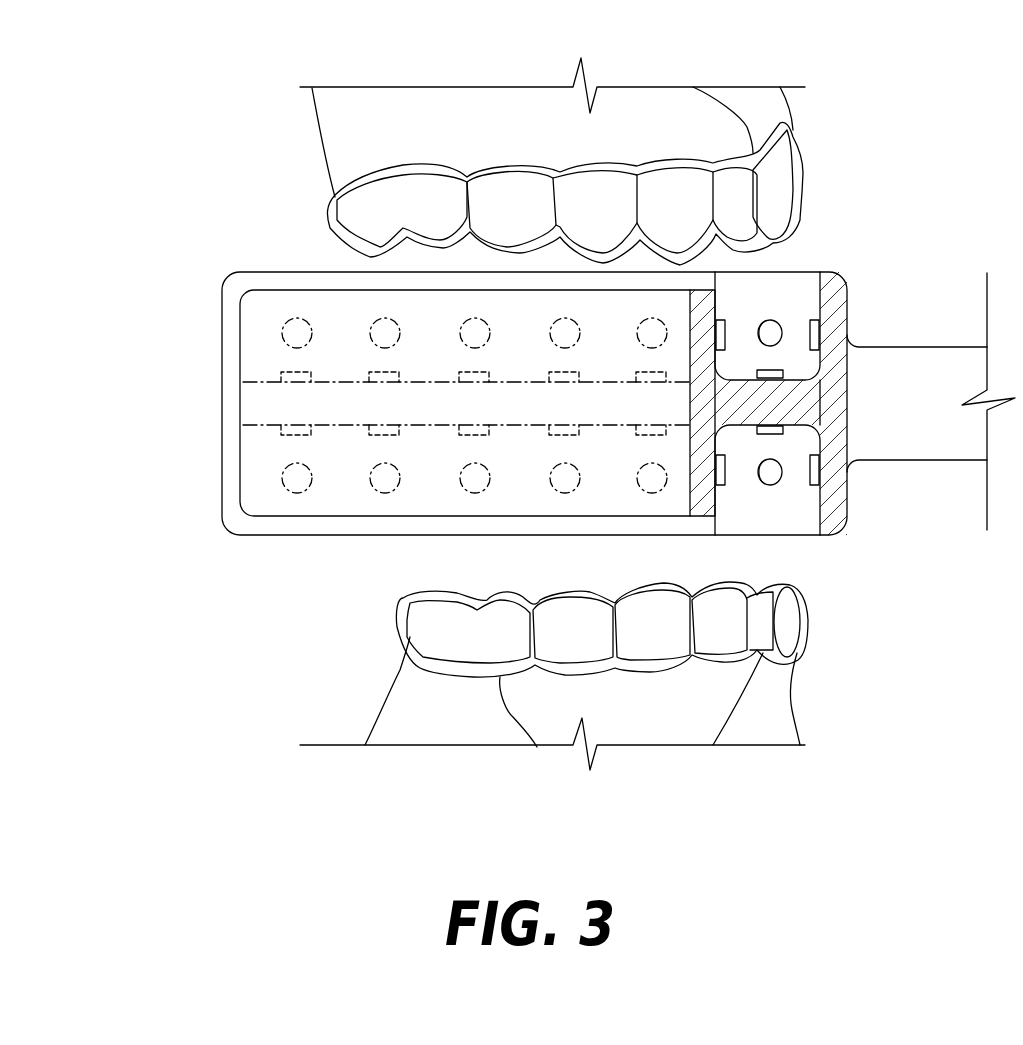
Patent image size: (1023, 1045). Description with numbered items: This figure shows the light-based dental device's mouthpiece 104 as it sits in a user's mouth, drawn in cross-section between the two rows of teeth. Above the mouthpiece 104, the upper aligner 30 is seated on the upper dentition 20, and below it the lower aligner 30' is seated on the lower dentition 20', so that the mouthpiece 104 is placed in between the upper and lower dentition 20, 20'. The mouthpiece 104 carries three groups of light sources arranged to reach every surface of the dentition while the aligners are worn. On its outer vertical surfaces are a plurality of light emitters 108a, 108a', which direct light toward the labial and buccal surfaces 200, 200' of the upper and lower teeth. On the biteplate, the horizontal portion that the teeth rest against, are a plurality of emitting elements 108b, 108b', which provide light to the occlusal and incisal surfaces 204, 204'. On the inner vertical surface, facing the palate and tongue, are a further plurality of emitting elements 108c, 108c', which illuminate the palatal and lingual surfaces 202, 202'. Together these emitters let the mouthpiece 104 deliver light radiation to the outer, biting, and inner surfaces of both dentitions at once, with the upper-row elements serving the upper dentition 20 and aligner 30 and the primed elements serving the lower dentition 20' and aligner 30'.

The upper dentition 20 is at (565, 143).
The upper aligner 30 is at (552, 115).
The labial and buccal surfaces 200 is at (618, 173).
The palatal and lingual surfaces 202 is at (298, 178).
The occlusal and incisal surfaces 204 is at (297, 238).
The mouthpiece 104 is at (222, 392).
The light emitters 108a is at (873, 304).
The light emitters 108a' is at (861, 435).
The emitting elements 108b is at (413, 341).
The emitting elements 108b' is at (417, 461).
The emitting elements 108c is at (811, 271).
The emitting elements 108c' is at (816, 508).
The lower dentition 20' is at (603, 705).
The lower aligner 30' is at (552, 708).
The labial and buccal surfaces 200' is at (708, 629).
The palatal and lingual surfaces 202' is at (460, 720).
The occlusal and incisal surfaces 204' is at (361, 583).